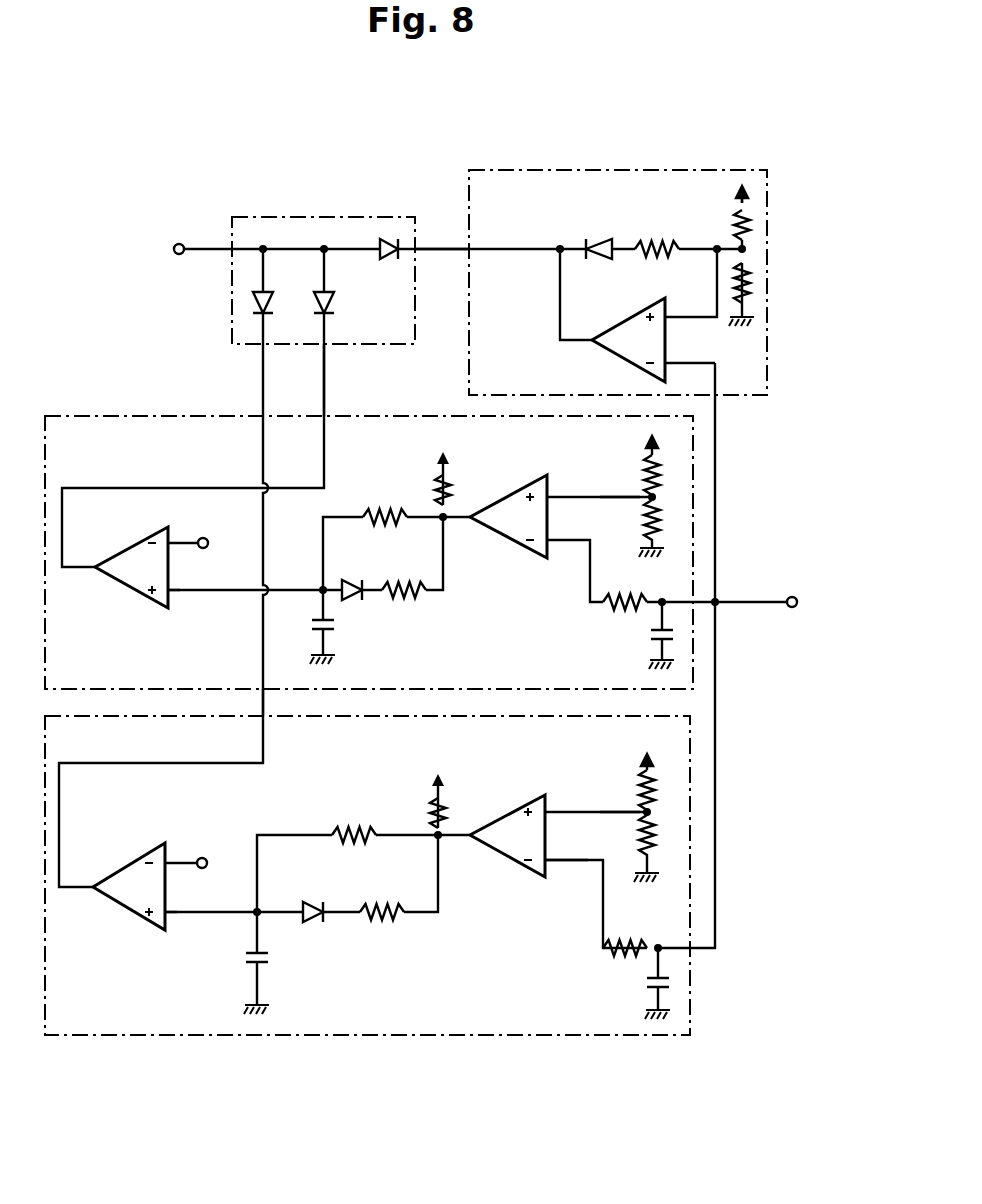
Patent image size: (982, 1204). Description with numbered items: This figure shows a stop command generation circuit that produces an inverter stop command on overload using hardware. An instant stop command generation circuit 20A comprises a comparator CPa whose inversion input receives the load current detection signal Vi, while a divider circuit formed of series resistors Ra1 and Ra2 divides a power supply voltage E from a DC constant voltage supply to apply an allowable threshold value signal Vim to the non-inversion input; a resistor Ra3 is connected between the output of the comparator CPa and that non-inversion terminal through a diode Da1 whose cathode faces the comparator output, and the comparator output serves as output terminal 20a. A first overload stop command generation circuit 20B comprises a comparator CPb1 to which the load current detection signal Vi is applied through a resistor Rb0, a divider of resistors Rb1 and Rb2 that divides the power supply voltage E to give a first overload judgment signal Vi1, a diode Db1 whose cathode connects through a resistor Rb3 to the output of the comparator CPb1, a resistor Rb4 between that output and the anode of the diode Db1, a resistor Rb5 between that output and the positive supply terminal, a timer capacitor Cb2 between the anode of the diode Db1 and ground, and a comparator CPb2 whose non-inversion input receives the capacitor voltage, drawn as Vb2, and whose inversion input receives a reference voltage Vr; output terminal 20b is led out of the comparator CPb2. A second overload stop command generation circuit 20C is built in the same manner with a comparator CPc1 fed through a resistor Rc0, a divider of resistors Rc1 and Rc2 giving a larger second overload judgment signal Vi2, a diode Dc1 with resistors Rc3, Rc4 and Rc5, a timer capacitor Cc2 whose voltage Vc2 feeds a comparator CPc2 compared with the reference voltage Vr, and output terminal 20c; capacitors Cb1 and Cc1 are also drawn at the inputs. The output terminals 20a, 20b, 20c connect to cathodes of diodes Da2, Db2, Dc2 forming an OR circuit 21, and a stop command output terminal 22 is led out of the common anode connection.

The stop command output terminal 22 is at (179, 244).
The OR circuit 21 is at (307, 217).
The output terminal 20a is at (468, 246).
The instant stop command generation circuit 20A is at (640, 172).
The output terminal 20b is at (330, 440).
The first overload stop command generation circuit 20B is at (694, 452).
The output terminal 20c is at (264, 732).
The second overload stop command generation circuit 20C is at (691, 746).
The diode Da1 is at (601, 238).
The diode Da2 is at (392, 262).
The diode Db1 is at (363, 582).
The diode Db2 is at (313, 300).
The diode Dc1 is at (312, 922).
The diode Dc2 is at (252, 298).
The resistor Ra1 is at (747, 226).
The resistor Ra2 is at (748, 290).
The resistor Ra3 is at (654, 240).
The resistor Rb0 is at (628, 606).
The resistor Rb1 is at (656, 478).
The resistor Rb2 is at (655, 520).
The resistor Rb3 is at (392, 598).
The resistor Rb4 is at (388, 512).
The resistor Rb5 is at (450, 488).
The resistor Rc0 is at (625, 952).
The resistor Rc1 is at (652, 780).
The resistor Rc2 is at (652, 835).
The resistor Rc3 is at (390, 920).
The resistor Rc4 is at (350, 830).
The resistor Rc5 is at (445, 812).
The capacitor Cb1 is at (672, 634).
The timer capacitor Cb2 is at (331, 626).
The capacitor Cc1 is at (668, 985).
The timer capacitor Cc2 is at (268, 957).
The comparator CPa is at (614, 354).
The comparator CPb1 is at (505, 541).
The comparator CPb2 is at (118, 582).
The comparator CPc1 is at (500, 862).
The comparator CPc2 is at (122, 912).
The reference voltage Vr is at (197, 688).
The load current detection signal Vi is at (777, 587).
The allowable threshold value signal Vim is at (698, 234).
The first overload judgment signal Vi1 is at (611, 479).
The second overload judgment signal Vi2 is at (609, 795).
The output voltage node Vb2 is at (191, 614).
The output voltage node Vc2 is at (188, 931).
The power supply voltage E is at (586, 467).